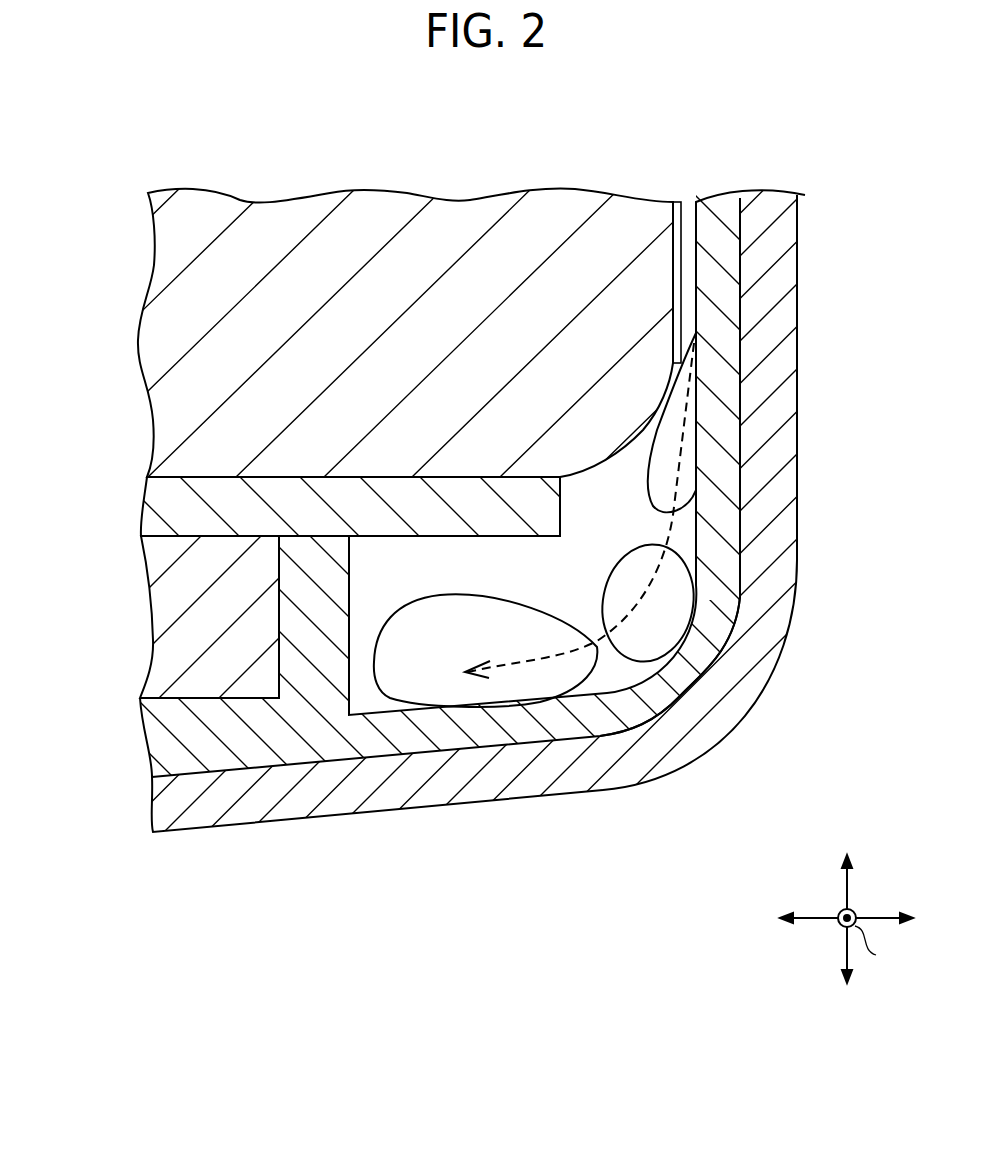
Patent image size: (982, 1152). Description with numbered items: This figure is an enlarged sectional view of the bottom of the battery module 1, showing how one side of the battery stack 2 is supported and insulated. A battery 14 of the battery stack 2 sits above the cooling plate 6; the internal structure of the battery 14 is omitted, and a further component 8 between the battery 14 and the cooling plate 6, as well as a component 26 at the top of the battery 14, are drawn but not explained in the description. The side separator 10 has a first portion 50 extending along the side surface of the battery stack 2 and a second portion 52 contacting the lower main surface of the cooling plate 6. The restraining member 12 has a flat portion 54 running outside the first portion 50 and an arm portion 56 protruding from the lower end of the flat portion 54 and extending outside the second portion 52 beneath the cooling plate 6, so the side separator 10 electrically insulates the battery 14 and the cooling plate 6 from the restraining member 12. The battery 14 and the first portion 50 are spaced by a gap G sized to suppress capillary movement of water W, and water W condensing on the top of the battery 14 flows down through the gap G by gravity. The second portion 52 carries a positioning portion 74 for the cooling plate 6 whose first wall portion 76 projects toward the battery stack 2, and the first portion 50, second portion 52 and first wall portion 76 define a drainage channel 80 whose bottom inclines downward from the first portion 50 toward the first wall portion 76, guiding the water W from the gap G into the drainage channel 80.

The welding apparatus 1 is at (478, 985).
The battery stack 2 is at (117, 192).
The cooling plate 6 is at (142, 622).
The spacer plate 8 is at (140, 508).
The battery 14 is at (140, 330).
The slit 26 is at (677, 202).
The gap G is at (689, 202).
The first portion 50 is at (740, 268).
The second portion 52 is at (472, 752).
The flat portion 54 is at (797, 335).
The arm portion 56 is at (400, 815).
The side separator 10 is at (722, 651).
The restraining member 12 is at (725, 740).
The drainage channel 80 is at (578, 562).
The water W is at (590, 672).
The positioning portion 74 is at (248, 700).
The first wall portion 76 is at (349, 662).